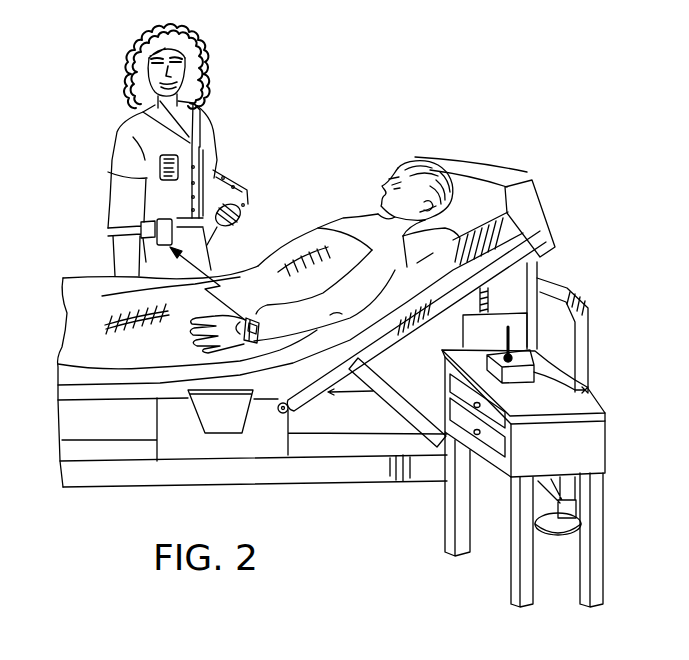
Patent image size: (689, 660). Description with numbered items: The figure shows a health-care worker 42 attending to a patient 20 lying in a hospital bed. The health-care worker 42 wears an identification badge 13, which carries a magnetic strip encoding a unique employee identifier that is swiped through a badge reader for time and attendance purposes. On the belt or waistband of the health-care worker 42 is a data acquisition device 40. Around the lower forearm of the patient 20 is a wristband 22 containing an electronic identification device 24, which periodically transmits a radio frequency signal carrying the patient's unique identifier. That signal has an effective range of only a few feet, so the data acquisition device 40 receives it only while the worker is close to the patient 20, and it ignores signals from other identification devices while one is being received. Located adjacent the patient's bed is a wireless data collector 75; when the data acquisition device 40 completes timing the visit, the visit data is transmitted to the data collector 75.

The identification badge 13 is at (157, 175).
The patient 20 is at (342, 224).
The wristband 22 is at (253, 344).
The electronic identification device 24 is at (258, 317).
The data acquisition device 40 is at (156, 233).
The health-care worker 42 is at (207, 134).
The wireless data collector 75 is at (513, 378).